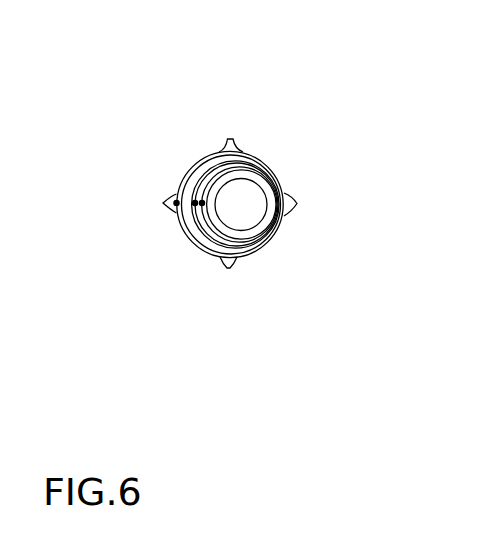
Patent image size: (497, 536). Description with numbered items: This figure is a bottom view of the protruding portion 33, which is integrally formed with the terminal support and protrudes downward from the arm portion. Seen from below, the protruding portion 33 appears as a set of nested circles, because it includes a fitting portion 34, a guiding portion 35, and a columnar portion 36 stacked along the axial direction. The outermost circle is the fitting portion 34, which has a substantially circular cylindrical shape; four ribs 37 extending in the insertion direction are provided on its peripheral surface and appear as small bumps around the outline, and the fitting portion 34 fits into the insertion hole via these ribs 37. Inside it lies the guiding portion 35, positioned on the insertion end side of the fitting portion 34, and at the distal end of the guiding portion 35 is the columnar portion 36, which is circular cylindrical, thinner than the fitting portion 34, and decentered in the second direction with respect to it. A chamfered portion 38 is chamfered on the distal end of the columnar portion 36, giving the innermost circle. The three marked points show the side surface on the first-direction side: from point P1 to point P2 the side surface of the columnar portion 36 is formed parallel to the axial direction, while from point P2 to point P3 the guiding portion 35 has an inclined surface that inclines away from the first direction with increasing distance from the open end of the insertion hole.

The protruding portion 33 is at (125, 145).
The fitting portion 34 is at (250, 153).
The guiding portion 35 is at (208, 210).
The columnar portion 36 is at (238, 162).
The ribs 37 is at (235, 262).
The chamfered portion 38 is at (206, 213).
The point P1 is at (202, 200).
The point P2 is at (195, 200).
The point P3 is at (176, 200).